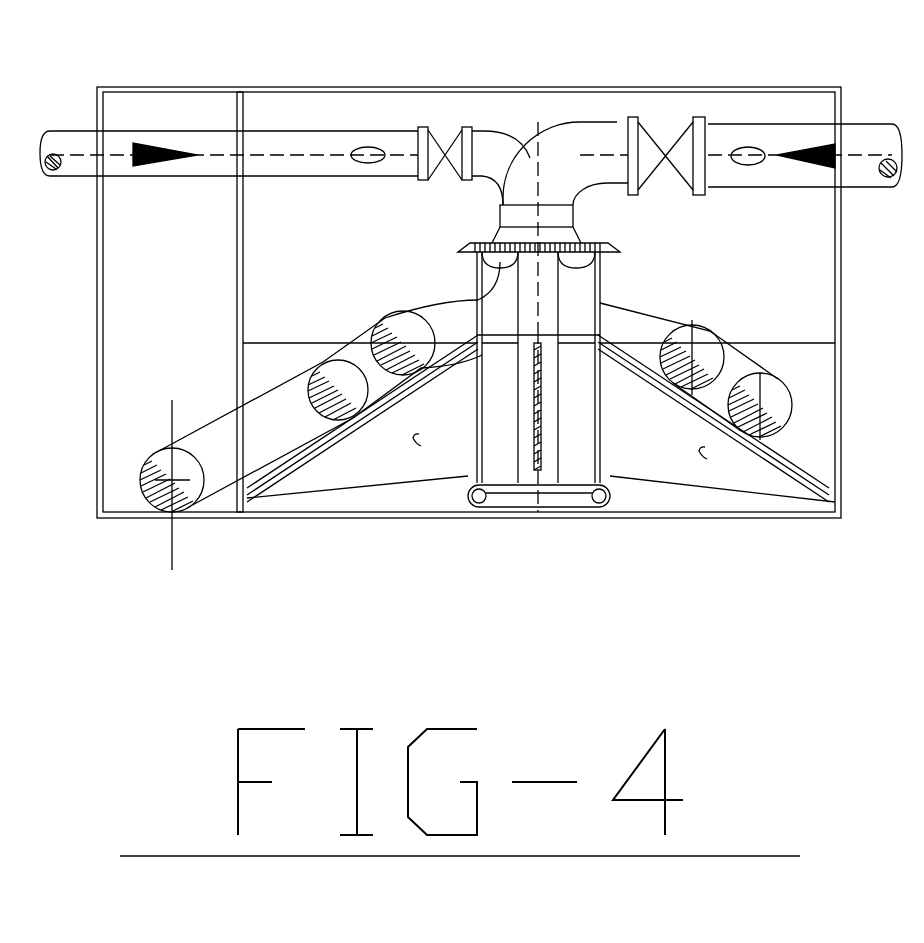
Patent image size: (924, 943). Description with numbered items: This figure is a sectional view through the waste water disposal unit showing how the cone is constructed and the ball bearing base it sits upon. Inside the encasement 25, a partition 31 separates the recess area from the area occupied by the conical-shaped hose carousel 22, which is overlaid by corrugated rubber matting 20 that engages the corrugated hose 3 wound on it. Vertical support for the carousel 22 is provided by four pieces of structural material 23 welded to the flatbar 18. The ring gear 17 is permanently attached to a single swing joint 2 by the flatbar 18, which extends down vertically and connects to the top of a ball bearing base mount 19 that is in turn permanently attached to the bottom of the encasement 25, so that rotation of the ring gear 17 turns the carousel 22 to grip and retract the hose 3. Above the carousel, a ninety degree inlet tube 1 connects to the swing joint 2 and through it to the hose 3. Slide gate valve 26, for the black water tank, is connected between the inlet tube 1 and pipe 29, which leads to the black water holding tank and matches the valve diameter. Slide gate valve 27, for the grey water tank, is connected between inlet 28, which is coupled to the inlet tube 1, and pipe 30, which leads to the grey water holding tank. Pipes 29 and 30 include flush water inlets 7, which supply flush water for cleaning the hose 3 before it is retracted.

The 90 degree inlet tube 1 is at (580, 122).
The swing joint 2 is at (500, 218).
The hose 3 is at (220, 430).
The flush water inlets 7 is at (365, 147).
The ring gear 17 is at (605, 246).
The flatbar 18 is at (477, 273).
The ball bearing base mount 19 is at (606, 497).
The rubber matting 20 is at (372, 410).
The conical-shaped hose carousel 22 is at (350, 438).
The structural material 23 is at (421, 446).
The encasement 25 is at (277, 87).
The slide gate valve 26 is at (660, 170).
The slide gate valve 27 is at (455, 150).
The inlet 28 is at (500, 135).
The pipe 29 is at (855, 124).
The pipe 30 is at (72, 131).
The partition 31 is at (237, 271).